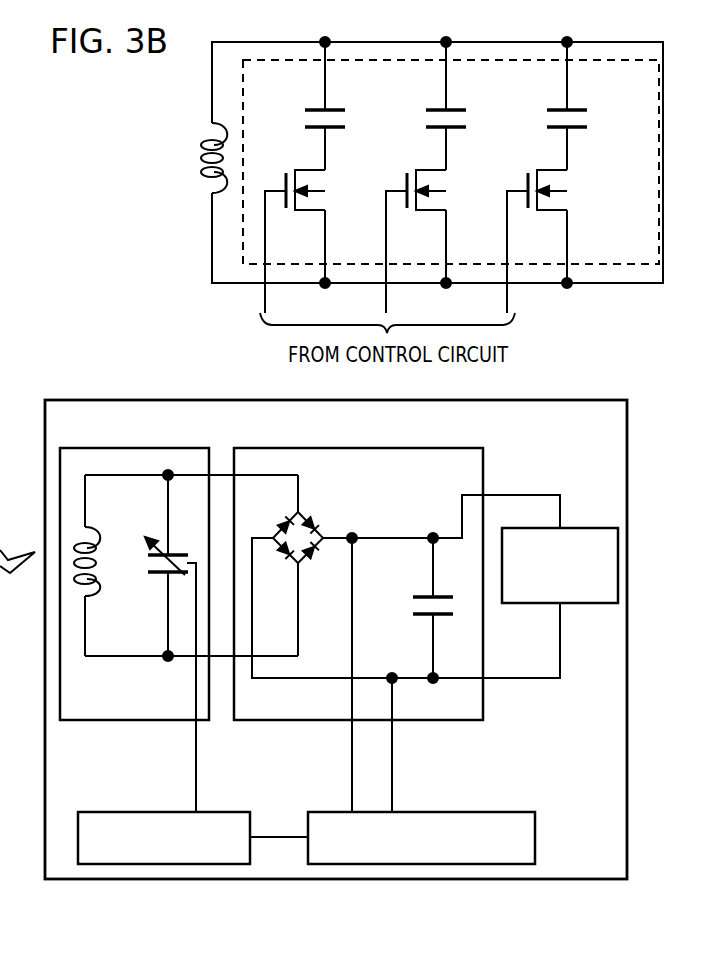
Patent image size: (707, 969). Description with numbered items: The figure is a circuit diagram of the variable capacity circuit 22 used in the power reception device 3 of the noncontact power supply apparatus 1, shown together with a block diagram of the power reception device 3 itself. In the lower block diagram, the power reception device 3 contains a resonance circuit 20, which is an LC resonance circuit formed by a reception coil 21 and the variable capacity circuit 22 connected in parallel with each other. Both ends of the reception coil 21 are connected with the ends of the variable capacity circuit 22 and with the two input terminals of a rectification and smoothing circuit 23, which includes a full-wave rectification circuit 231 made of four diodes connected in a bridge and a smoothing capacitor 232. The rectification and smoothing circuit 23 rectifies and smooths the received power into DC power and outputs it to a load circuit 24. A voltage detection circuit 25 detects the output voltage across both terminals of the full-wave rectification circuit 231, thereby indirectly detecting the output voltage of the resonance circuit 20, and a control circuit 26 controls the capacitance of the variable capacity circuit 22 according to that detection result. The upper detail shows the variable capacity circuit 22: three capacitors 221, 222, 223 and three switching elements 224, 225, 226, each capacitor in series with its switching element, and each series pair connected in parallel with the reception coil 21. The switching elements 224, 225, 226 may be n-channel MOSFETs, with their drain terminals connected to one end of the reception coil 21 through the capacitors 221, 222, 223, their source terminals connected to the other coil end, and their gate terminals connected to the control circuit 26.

The noncontact power supply apparatus 1 is at (371, 925).
The power reception device 3 is at (520, 879).
The resonance circuit 20 is at (137, 721).
The reception coil 21 is at (197, 165).
The variable capacity circuit 22 is at (659, 155).
The rectification and smoothing circuit 23 is at (397, 630).
The load circuit 24 is at (593, 603).
The voltage detection circuit 25 is at (393, 864).
The control circuit 26 is at (153, 864).
The capacitor 221 is at (333, 103).
The capacitor 222 is at (453, 103).
The capacitor 223 is at (573, 103).
The switching element 224 is at (323, 180).
The switching element 225 is at (444, 180).
The switching element 226 is at (573, 179).
The full-wave rectification circuit 231 is at (320, 515).
The smoothing capacitor 232 is at (405, 600).